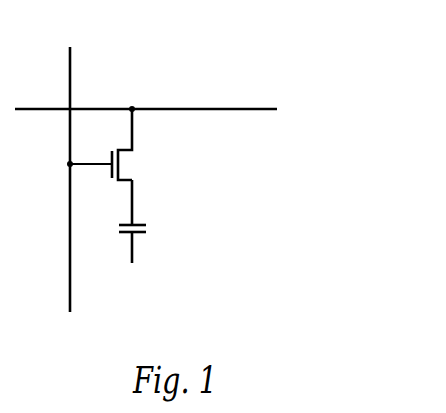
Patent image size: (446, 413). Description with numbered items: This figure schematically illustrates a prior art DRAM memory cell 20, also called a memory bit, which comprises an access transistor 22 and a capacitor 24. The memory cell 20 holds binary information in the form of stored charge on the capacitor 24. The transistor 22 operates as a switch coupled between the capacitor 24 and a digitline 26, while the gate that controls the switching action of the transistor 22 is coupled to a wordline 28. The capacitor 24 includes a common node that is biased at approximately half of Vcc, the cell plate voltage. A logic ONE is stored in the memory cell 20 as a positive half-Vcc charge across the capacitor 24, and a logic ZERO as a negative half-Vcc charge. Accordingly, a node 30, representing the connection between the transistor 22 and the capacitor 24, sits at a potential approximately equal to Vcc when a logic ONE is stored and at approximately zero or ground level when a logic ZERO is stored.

The memory cell 20 is at (329, 134).
The access transistor 22 is at (122, 164).
The capacitor 24 is at (150, 228).
The digitline 26 is at (104, 107).
The wordline 28 is at (67, 136).
The node 30 is at (135, 197).